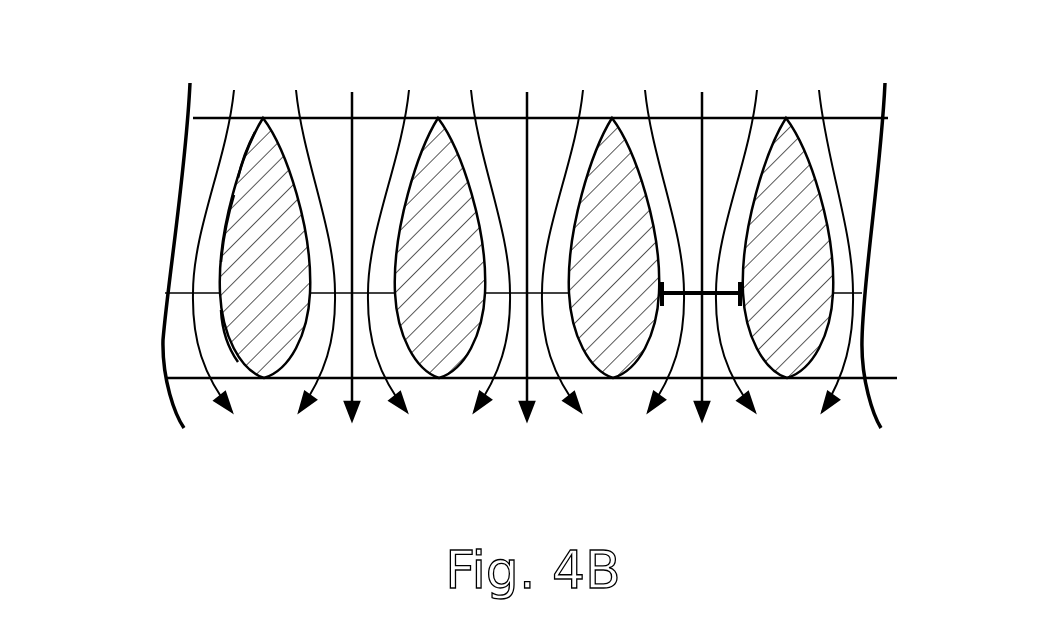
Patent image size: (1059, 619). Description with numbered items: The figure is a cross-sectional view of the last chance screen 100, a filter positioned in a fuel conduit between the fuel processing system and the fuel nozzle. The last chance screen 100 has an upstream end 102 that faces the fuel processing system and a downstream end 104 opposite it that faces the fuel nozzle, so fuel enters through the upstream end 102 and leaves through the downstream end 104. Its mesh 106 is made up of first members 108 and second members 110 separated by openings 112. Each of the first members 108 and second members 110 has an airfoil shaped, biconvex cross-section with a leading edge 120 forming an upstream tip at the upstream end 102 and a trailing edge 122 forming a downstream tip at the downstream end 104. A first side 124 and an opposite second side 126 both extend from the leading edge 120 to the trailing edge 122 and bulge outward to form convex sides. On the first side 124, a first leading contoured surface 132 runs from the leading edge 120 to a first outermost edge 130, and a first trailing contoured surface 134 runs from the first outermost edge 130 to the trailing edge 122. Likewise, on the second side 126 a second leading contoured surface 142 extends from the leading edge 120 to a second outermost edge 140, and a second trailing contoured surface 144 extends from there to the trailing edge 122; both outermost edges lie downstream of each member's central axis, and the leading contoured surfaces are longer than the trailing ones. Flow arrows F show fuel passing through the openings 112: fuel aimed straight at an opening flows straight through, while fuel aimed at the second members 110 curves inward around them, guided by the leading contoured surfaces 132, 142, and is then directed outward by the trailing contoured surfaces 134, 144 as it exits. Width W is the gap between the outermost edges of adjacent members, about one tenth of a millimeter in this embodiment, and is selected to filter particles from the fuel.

The last chance screen 100 is at (513, 285).
The upstream end 102 is at (540, 73).
The downstream end 104 is at (533, 456).
The mesh 106 is at (850, 210).
The first members 108 is at (855, 158).
The second members 110 is at (257, 340).
The openings 112 is at (203, 303).
The leading edge 120 is at (268, 130).
The trailing edge 122 is at (263, 380).
The first side 124 is at (224, 248).
The second side 126 is at (333, 200).
The first outermost edge 130 is at (205, 292).
The first leading contoured surface 132 is at (237, 176).
The first trailing contoured surface 134 is at (225, 332).
The second outermost edge 140 is at (382, 268).
The second leading contoured surface 142 is at (278, 140).
The second trailing contoured surface 144 is at (287, 379).
The flow arrows F is at (702, 102).
The width W is at (683, 297).